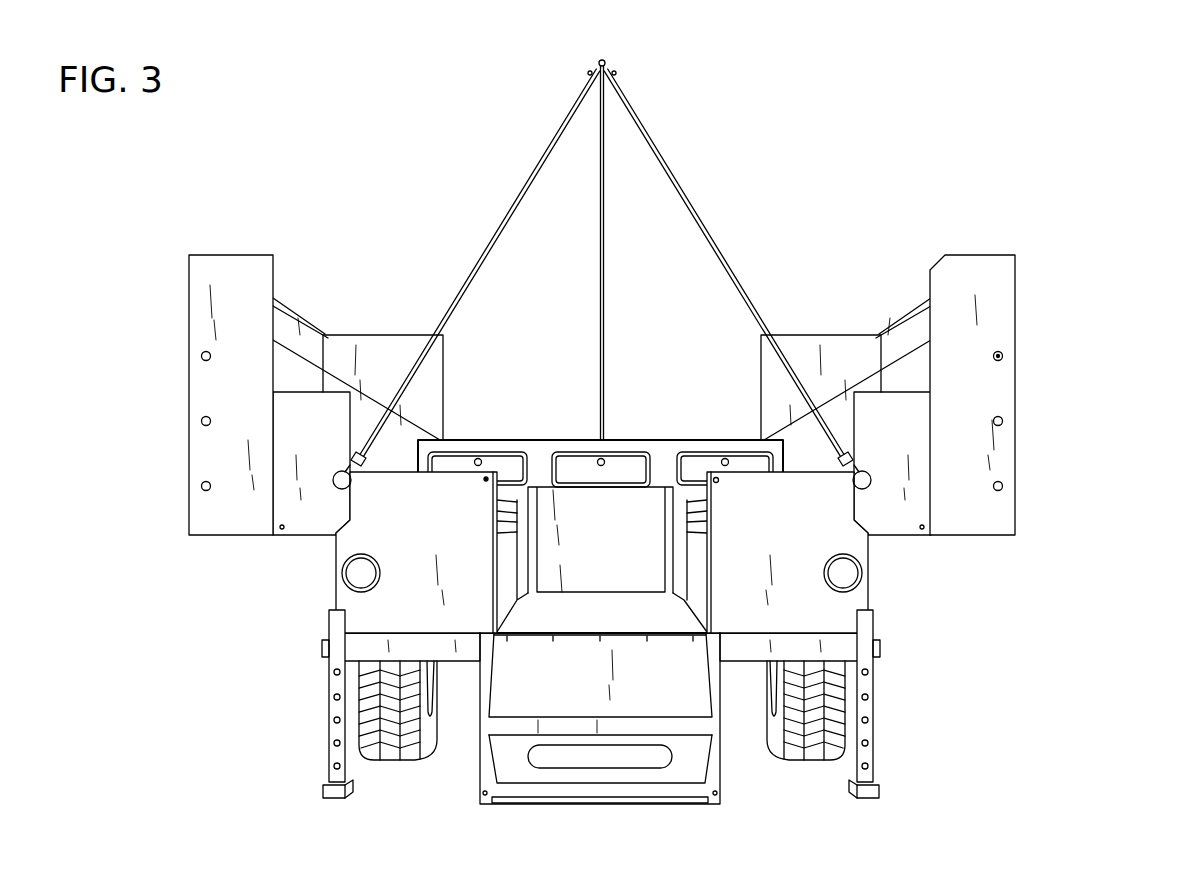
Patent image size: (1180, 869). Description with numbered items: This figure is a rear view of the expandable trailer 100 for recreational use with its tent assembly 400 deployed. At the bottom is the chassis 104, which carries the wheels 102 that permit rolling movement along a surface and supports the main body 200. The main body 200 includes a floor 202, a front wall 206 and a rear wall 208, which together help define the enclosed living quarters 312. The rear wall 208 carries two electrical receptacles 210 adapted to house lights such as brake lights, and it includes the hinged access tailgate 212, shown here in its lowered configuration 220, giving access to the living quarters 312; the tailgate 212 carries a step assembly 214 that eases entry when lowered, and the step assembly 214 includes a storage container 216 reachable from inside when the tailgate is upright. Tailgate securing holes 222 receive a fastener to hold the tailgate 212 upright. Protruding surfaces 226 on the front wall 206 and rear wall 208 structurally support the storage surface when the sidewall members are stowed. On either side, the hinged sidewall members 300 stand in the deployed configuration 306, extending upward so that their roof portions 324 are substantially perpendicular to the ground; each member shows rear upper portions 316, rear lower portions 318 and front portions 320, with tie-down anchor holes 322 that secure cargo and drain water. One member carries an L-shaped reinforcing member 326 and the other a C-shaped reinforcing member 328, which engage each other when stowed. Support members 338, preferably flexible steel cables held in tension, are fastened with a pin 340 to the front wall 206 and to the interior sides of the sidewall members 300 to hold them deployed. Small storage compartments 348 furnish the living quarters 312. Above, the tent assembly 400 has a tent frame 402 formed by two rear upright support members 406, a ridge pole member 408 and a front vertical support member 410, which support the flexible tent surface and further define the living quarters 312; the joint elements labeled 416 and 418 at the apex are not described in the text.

The expandable trailer 100 is at (1058, 127).
The wheels 102 is at (365, 700).
The chassis 104 is at (840, 652).
The main body 200 is at (900, 572).
The floor 202 is at (680, 620).
The front wall 206 is at (560, 605).
The rear wall 208 is at (355, 540).
The electrical receptacles 210 is at (355, 585).
The hinged access tailgate 212 is at (712, 780).
The step assembly 214 is at (507, 727).
The storage container 216 is at (640, 760).
The lowered configuration 220 is at (528, 815).
The tailgate securing holes 222 is at (485, 480).
The protruding surfaces 226 is at (517, 440).
The hinged sidewall members 300 is at (200, 387).
The deployed configuration 306 is at (920, 218).
The enclosed living quarters 312 is at (677, 335).
The rear upper portions 316 is at (200, 457).
The rear lower portions 318 is at (285, 507).
The front portions 320 is at (350, 353).
The tie-down anchor holes 322 is at (1000, 356).
The roof portions 324 is at (288, 368).
The L-shaped reinforcing member 326 is at (905, 325).
The C-shaped reinforcing member 328 is at (285, 322).
The support members 338 is at (368, 358).
The pin 340 is at (321, 364).
The small storage compartments 348 is at (620, 467).
The tent assembly 400 is at (690, 120).
The tent frame 402 is at (537, 133).
The rear upright support members 406 is at (492, 242).
The ridge pole member 408 is at (603, 118).
The front vertical support member 410 is at (602, 208).
The apex joint 416 is at (597, 50).
The apex pin 418 is at (605, 66).